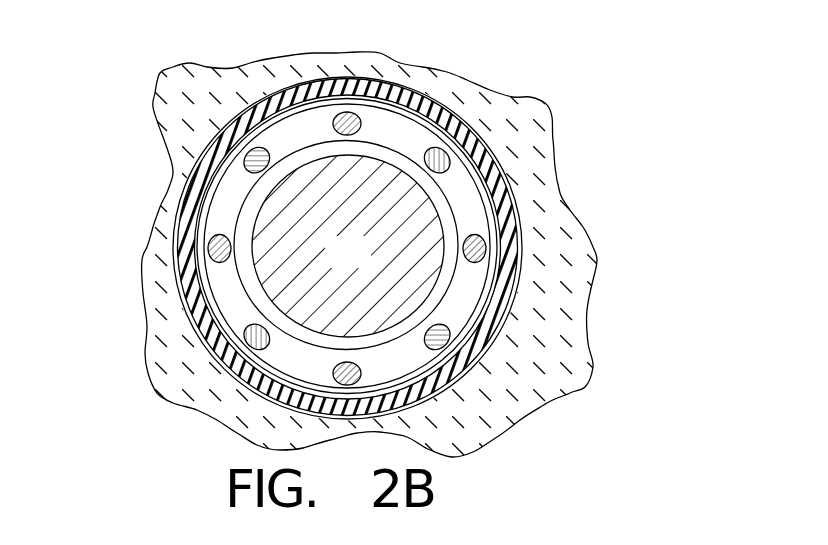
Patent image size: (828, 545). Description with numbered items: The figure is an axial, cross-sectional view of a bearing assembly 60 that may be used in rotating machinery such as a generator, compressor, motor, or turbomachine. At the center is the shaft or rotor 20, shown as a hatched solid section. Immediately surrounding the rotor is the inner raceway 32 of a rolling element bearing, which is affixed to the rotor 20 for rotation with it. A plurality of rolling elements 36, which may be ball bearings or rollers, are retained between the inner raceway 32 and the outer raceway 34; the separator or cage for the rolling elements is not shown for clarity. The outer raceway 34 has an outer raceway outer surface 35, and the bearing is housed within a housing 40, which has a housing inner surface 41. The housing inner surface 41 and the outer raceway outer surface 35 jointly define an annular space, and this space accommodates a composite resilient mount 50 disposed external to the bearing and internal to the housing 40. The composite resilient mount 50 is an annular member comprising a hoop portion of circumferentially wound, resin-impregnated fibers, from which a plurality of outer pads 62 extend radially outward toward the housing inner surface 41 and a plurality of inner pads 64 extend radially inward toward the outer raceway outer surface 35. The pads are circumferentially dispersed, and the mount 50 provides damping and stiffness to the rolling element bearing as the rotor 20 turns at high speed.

The rotor 20 is at (365, 265).
The inner raceway 32 is at (443, 207).
The outer raceway 34 is at (477, 317).
The outer raceway outer surface 35 is at (515, 283).
The rolling elements 36 is at (427, 170).
The housing 40 is at (594, 400).
The housing inner surface 41 is at (248, 397).
The composite resilient mount 50 is at (430, 393).
The bearing assembly 60 is at (135, 104).
The outer pads 62 is at (166, 159).
The inner pads 64 is at (190, 335).